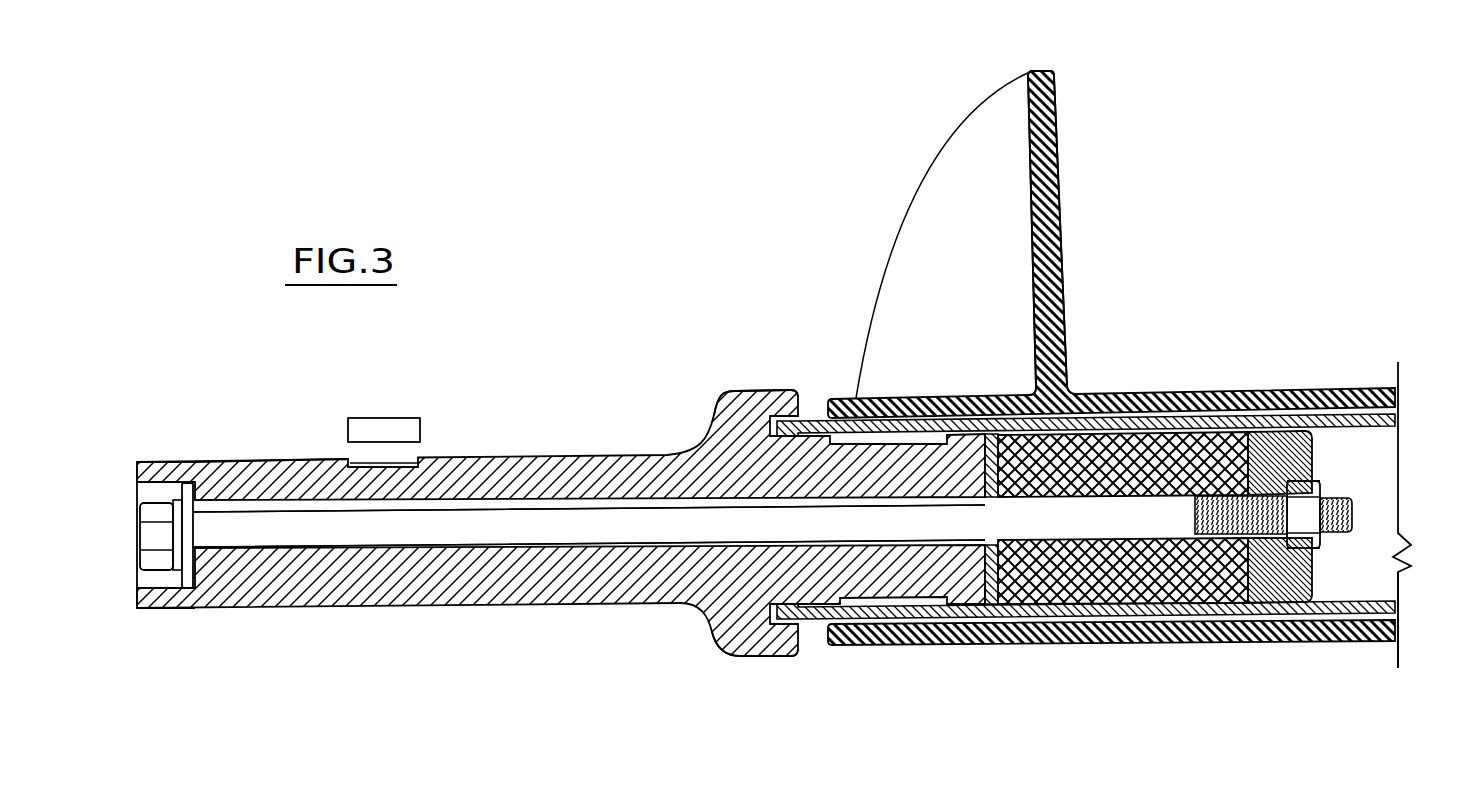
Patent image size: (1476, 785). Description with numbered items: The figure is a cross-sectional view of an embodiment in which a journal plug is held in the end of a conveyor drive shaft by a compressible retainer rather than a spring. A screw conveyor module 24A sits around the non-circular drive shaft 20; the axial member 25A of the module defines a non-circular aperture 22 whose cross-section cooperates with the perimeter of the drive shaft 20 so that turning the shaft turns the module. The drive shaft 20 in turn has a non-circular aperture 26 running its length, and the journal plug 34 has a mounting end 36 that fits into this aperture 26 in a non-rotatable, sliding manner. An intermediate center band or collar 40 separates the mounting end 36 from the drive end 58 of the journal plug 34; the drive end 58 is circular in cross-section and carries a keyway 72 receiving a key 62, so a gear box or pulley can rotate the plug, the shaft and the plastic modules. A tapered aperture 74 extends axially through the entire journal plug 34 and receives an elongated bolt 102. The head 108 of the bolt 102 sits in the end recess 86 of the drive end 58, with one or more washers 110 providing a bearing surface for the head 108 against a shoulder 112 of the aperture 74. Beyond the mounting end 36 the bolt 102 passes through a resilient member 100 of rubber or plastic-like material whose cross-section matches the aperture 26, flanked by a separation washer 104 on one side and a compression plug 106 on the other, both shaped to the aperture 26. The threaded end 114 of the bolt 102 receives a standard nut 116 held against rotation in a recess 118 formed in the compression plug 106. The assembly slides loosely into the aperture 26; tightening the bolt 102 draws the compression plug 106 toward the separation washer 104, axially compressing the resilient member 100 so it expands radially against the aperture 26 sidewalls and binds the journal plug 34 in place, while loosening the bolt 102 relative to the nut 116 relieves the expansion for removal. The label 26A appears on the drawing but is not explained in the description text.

The drive shaft 20 is at (1330, 417).
The non-circular aperture 22 is at (1400, 620).
The screw conveyor module 24A is at (1120, 379).
The axial member 25A is at (1257, 397).
The non-circular aperture 26 is at (1373, 498).
The post 26A is at (990, 128).
The journal plug 34 is at (530, 611).
The mounting end 36 is at (893, 620).
The center band or collar 40 is at (753, 637).
The drive end 58 is at (382, 583).
The key 62 is at (375, 427).
The keyway 72 is at (410, 463).
The tapered aperture 74 is at (277, 557).
The end recess 86 is at (148, 492).
The resilient member 100 is at (1150, 604).
The elongated bolt 102 is at (600, 528).
The separation washer 104 is at (990, 606).
The compression plug 106 is at (1283, 580).
The head 108 is at (157, 538).
The washers 110 is at (173, 565).
The shoulder 112 is at (228, 467).
The threaded end 114 is at (1338, 530).
The nut 116 is at (1313, 487).
The recess 118 is at (1318, 548).